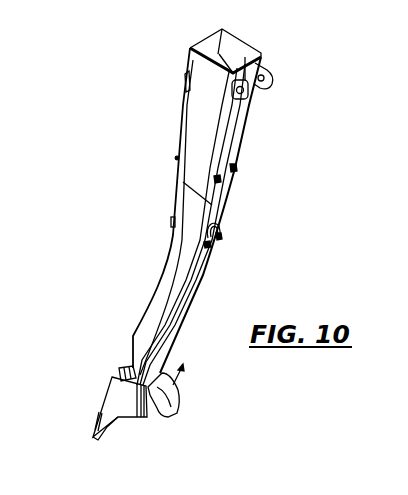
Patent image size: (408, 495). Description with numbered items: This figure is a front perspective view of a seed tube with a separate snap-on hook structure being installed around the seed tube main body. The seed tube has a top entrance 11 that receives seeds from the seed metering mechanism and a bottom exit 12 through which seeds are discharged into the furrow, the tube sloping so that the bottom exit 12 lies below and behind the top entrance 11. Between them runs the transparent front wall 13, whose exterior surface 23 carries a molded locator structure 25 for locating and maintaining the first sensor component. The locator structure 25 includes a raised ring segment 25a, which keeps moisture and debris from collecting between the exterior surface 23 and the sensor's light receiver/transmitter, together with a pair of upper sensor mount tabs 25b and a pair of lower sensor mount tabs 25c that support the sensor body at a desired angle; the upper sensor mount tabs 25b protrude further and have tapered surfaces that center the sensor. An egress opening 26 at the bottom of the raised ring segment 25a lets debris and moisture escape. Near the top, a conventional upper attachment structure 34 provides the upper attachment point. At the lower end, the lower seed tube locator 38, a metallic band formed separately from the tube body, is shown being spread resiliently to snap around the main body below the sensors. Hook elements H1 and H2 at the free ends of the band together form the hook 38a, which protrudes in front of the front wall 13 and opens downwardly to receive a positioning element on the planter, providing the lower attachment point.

The top entrance 11 is at (240, 53).
The bottom exit 12 is at (132, 352).
The front wall 13 is at (212, 205).
The exterior surface 23 is at (219, 228).
The locator structure 25 is at (207, 232).
The raised ring segment 25a is at (223, 236).
The upper sensor mount tabs 25b is at (234, 167).
The lower sensor mount tabs 25c is at (208, 246).
The egress opening 26 is at (209, 243).
The upper attachment structure 34 is at (274, 85).
The lower seed tube locator 38 is at (108, 395).
The hook 38a is at (177, 412).
The hook element H1 is at (166, 417).
The hook element H2 is at (176, 405).